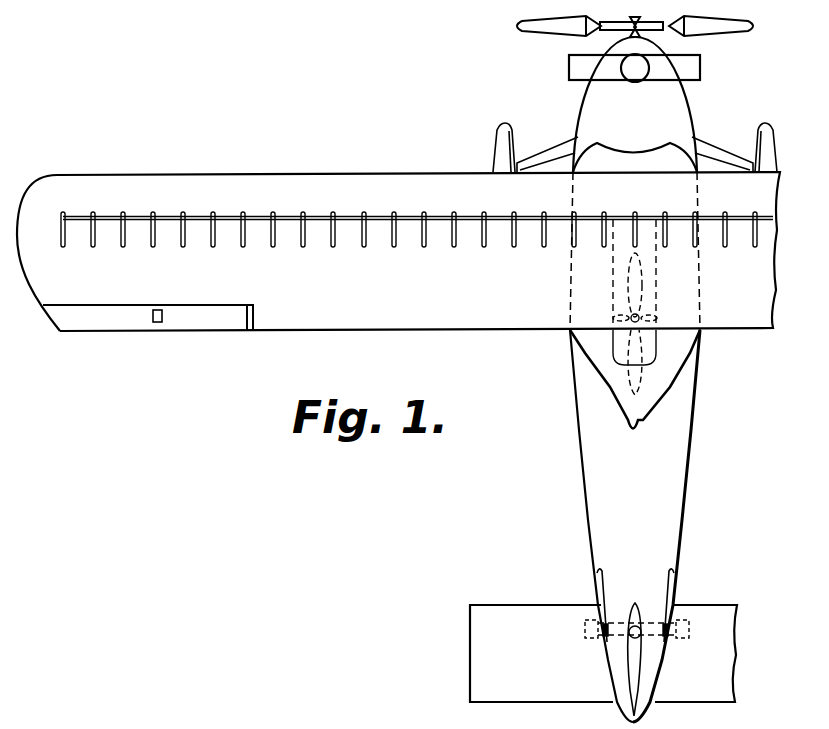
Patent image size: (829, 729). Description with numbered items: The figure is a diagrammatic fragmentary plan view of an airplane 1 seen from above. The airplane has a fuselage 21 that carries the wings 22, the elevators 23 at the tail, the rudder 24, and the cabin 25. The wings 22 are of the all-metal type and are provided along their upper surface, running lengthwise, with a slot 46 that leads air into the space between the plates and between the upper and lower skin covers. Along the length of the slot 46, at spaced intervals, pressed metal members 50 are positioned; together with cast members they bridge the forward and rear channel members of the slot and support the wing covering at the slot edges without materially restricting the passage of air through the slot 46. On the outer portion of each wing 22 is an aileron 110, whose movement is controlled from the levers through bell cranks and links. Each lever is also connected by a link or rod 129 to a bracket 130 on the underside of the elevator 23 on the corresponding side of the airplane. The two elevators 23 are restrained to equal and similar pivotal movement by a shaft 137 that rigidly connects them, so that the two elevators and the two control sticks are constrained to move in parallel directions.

The hinge 1 is at (157, 322).
The fuselage 21 is at (575, 421).
The wings 22 is at (398, 251).
The elevators 23 is at (603, 653).
The rudder 24 is at (636, 670).
The cabin 25 is at (667, 388).
The slot 46 is at (293, 213).
The pressed metal member 50 is at (243, 250).
The aileron 110 is at (148, 318).
The link or rod 129 is at (597, 597).
The bracket 130 is at (585, 632).
The shaft 137 is at (617, 628).